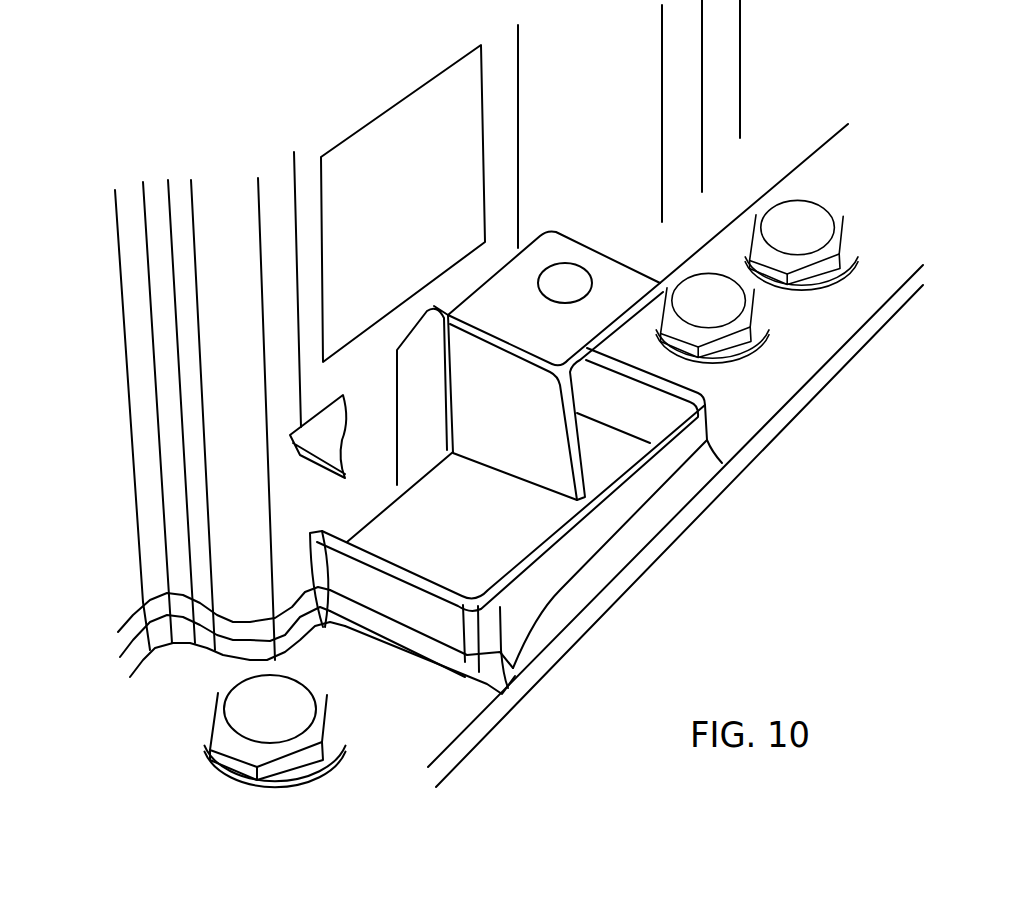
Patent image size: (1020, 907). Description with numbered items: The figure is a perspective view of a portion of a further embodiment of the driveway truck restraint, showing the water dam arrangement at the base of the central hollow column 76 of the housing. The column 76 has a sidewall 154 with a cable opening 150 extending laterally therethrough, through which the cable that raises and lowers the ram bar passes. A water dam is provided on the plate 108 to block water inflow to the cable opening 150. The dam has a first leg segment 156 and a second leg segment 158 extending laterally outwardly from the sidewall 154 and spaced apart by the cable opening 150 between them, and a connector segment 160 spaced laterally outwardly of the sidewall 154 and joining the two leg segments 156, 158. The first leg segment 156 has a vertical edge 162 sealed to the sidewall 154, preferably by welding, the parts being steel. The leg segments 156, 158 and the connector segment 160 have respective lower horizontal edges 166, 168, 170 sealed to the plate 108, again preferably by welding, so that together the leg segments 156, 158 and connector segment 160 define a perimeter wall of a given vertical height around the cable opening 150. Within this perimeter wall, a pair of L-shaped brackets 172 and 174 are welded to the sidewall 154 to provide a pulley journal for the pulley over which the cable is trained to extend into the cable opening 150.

The central hollow column 76 is at (237, 285).
The plate 108 is at (462, 752).
The cable opening 150 is at (410, 353).
The sidewall 154 is at (297, 353).
The first leg segment 156 is at (410, 607).
The second leg segment 158 is at (693, 390).
The connector segment 160 is at (590, 540).
The vertical edge 162 is at (318, 572).
The lower horizontal edge 166 is at (447, 670).
The lower horizontal edge 168 is at (720, 462).
The lower horizontal edge 170 is at (562, 620).
The L-shaped bracket 172 is at (297, 448).
The L-shaped bracket 174 is at (606, 273).